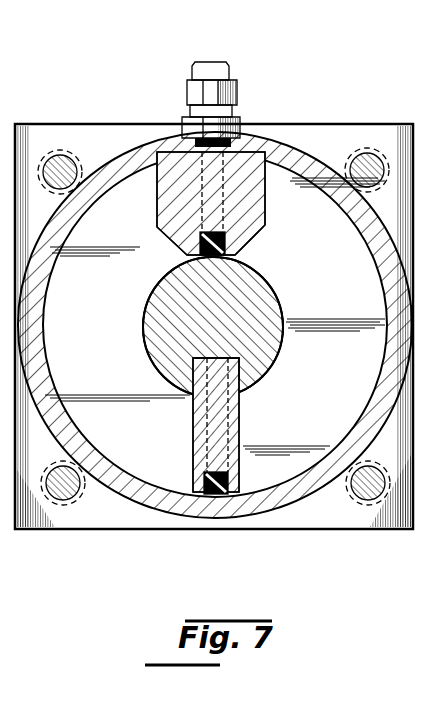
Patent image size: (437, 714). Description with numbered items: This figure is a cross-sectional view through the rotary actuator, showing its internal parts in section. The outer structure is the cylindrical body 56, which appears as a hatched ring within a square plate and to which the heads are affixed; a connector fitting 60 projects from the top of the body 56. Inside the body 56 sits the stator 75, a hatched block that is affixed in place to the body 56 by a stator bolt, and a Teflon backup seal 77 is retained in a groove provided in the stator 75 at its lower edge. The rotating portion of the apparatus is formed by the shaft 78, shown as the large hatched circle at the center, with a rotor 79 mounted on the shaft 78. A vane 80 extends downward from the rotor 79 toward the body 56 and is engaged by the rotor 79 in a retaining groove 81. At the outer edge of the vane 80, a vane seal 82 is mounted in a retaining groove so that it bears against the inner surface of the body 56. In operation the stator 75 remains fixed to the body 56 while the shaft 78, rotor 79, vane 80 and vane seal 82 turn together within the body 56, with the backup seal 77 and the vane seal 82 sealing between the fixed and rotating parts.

The cylindrical body 56 is at (380, 254).
The connector fitting 60 is at (214, 64).
The stator 75 is at (157, 202).
The Teflon backup seal 77 is at (210, 256).
The shaft 78 is at (150, 347).
The rotor 79 is at (268, 288).
The vane 80 is at (194, 427).
The retaining groove 81 is at (238, 378).
The vane seal 82 is at (212, 497).